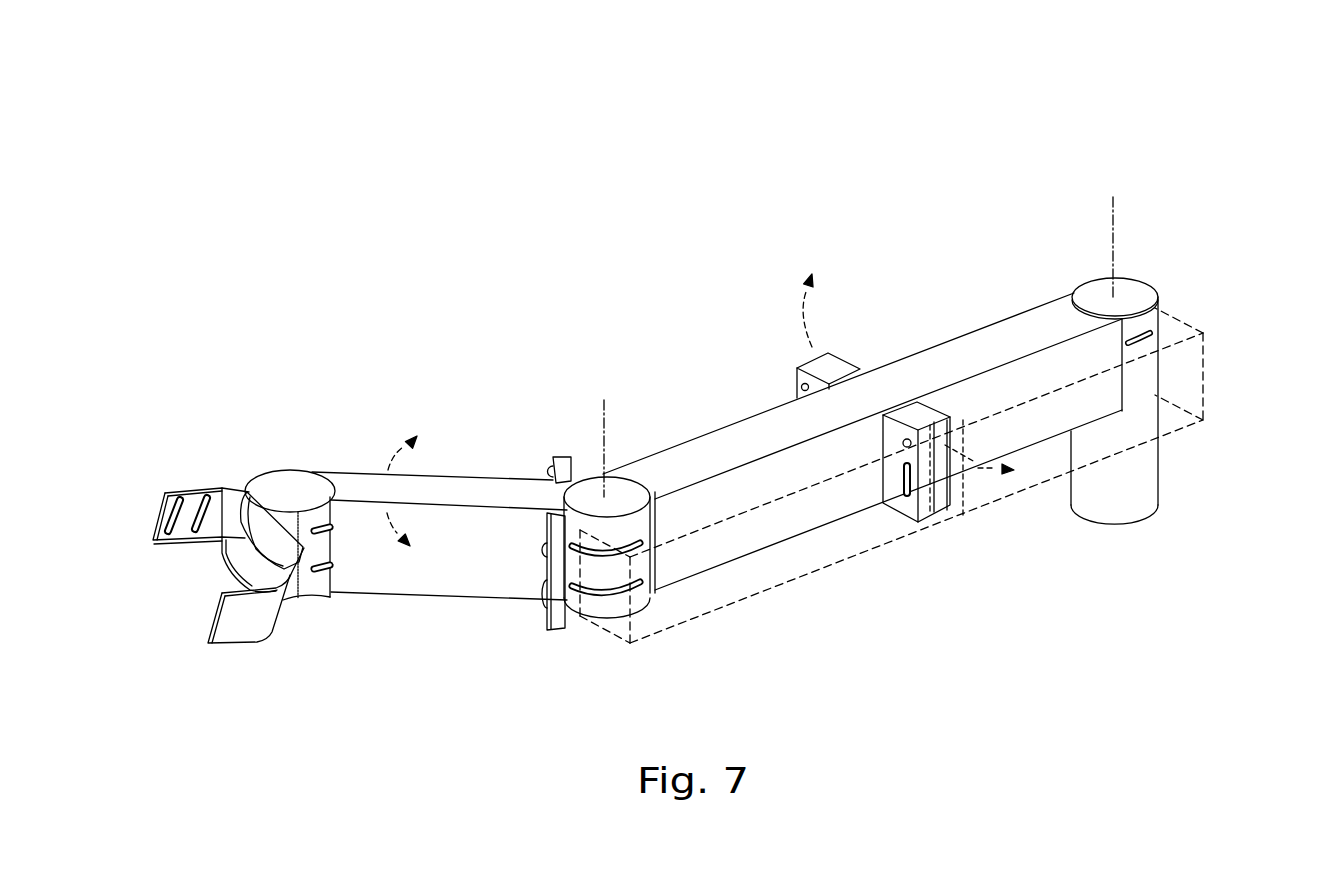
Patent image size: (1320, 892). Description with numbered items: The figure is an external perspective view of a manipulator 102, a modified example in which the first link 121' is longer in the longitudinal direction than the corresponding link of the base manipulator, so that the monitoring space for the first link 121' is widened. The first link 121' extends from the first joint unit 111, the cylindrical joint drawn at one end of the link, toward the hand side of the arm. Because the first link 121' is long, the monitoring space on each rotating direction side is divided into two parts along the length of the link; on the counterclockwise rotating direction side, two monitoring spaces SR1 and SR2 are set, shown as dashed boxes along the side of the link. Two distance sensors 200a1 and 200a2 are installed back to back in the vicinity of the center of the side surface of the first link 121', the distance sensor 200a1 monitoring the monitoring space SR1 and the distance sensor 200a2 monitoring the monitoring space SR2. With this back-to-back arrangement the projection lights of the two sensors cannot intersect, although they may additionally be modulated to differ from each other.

The manipulator 102 is at (250, 103).
The first joint unit 111 is at (1128, 290).
The first link 121' is at (862, 432).
The distance sensor 200a1 is at (928, 507).
The distance sensor 200a2 is at (962, 507).
The monitoring space SR1 is at (746, 598).
The monitoring space SR2 is at (1178, 430).